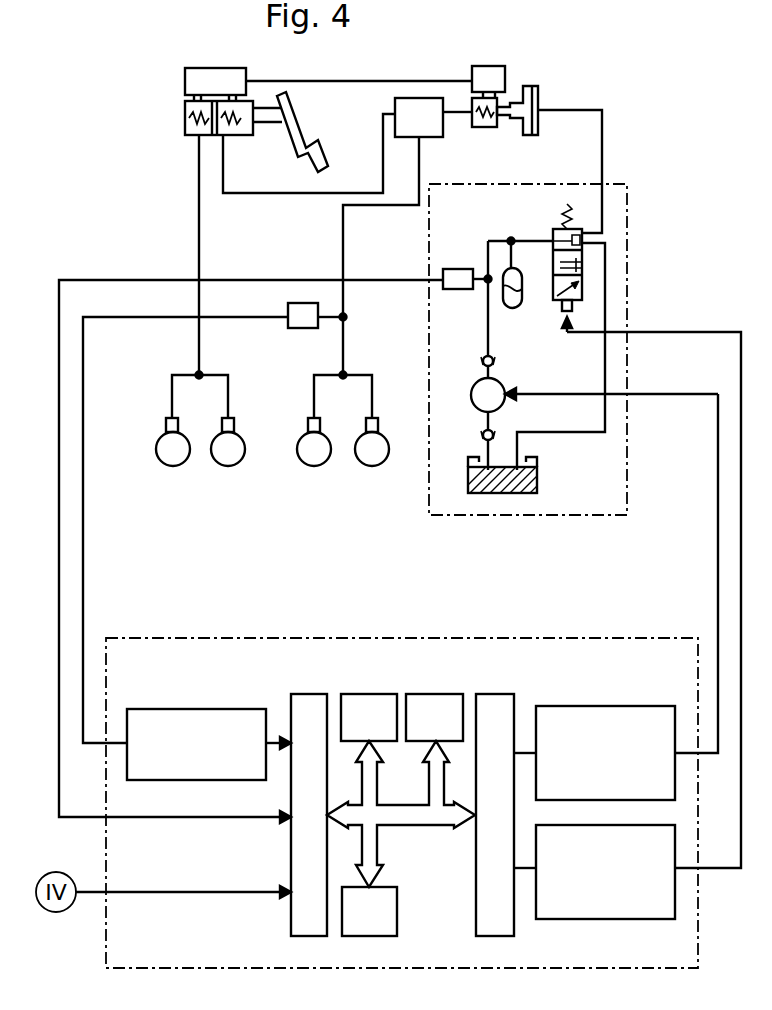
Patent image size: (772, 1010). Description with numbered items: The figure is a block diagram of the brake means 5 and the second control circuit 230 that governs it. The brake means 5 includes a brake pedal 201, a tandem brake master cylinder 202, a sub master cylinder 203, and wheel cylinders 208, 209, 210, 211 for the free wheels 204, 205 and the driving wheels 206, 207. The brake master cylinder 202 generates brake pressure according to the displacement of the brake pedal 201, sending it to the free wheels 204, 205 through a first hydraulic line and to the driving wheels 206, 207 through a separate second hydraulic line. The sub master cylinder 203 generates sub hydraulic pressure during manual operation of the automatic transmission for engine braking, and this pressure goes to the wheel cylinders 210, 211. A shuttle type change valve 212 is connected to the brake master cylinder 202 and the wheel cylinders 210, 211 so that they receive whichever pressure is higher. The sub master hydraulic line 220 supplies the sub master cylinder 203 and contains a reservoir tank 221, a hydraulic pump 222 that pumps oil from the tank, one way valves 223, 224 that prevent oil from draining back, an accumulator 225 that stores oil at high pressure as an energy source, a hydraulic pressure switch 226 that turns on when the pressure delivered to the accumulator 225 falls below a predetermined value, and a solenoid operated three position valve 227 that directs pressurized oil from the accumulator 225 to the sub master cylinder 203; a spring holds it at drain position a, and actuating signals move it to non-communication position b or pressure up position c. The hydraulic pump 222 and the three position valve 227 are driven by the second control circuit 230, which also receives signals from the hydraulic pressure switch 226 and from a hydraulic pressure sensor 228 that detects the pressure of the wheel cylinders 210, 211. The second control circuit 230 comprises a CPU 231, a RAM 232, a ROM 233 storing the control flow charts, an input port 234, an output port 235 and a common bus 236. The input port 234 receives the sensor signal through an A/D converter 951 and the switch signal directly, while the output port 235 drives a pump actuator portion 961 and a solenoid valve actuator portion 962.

The brake means 5 is at (441, 61).
The brake pedal 201 is at (299, 132).
The brake master cylinder 202 is at (184, 121).
The sub master cylinder 203 is at (542, 95).
The free wheel 204 is at (165, 464).
The free wheel 205 is at (222, 464).
The driving wheel 206 is at (315, 464).
The driving wheel 207 is at (370, 465).
The wheel cylinder 208 is at (168, 417).
The wheel cylinder 209 is at (230, 417).
The wheel cylinder 210 is at (309, 417).
The wheel cylinder 211 is at (373, 417).
The change valve 212 is at (432, 138).
The sub master hydraulic line 220 is at (628, 278).
The reservoir tank 221 is at (538, 484).
The hydraulic pump 222 is at (472, 391).
The one way valve 223 is at (485, 357).
The one way valve 224 is at (496, 433).
The accumulator 225 is at (513, 308).
The hydraulic pressure switch 226 is at (452, 268).
The three position valve 227 is at (553, 230).
The hydraulic pressure sensor 228 is at (287, 327).
The second control circuit 230 is at (375, 638).
The CPU 231 is at (432, 693).
The RAM 232 is at (398, 917).
The ROM 233 is at (367, 693).
The input port 234 is at (297, 693).
The output port 235 is at (494, 693).
The common bus 236 is at (413, 826).
The A/D converter 951 is at (144, 709).
The pump actuator portion 961 is at (595, 706).
The solenoid valve actuator portion 962 is at (574, 920).